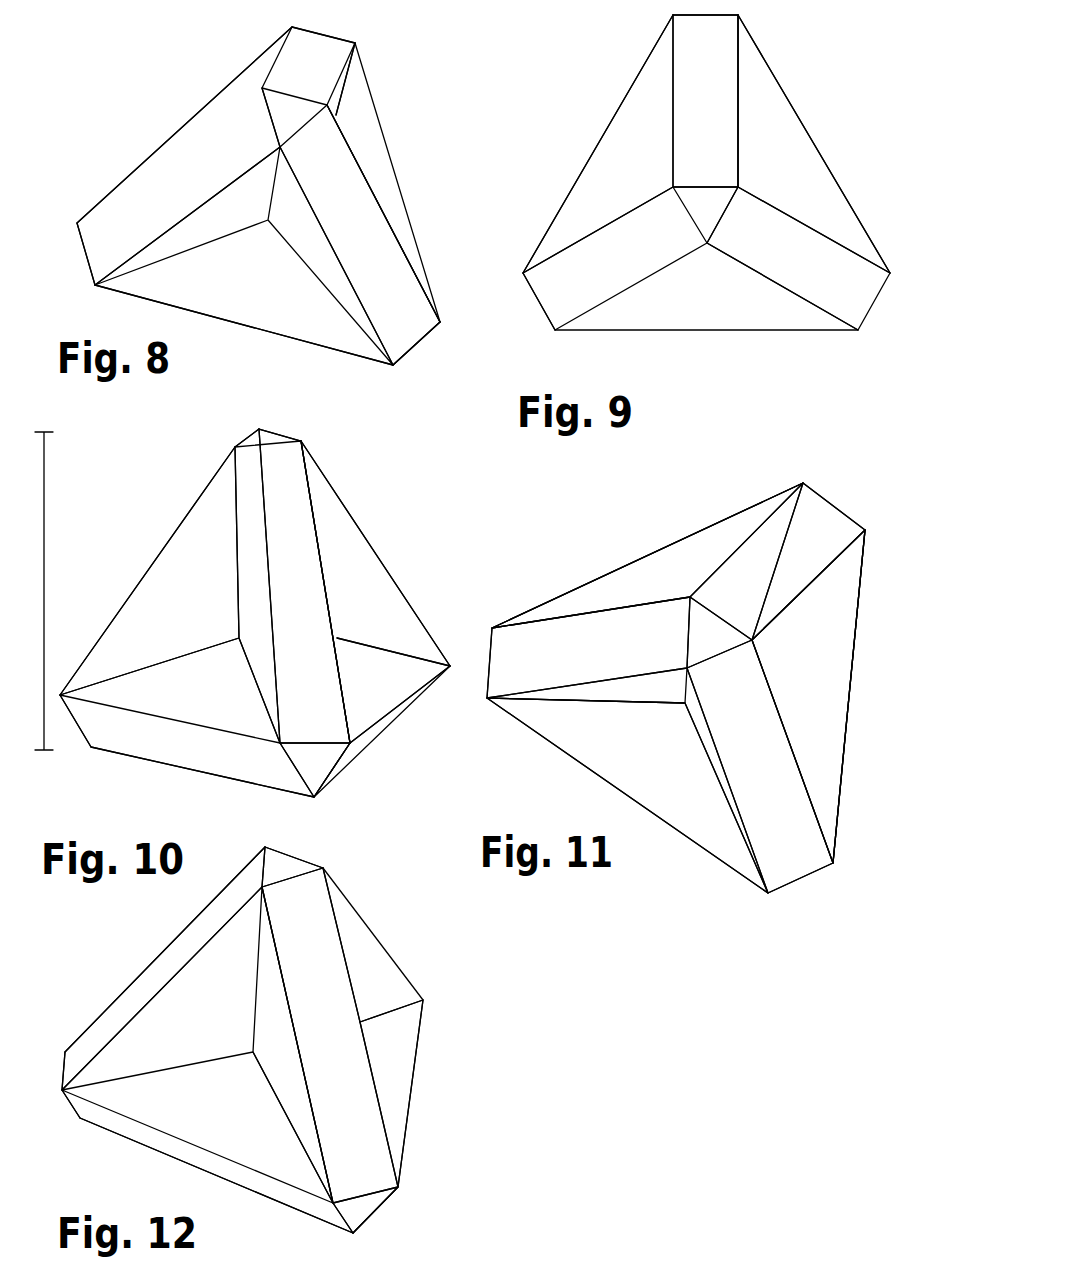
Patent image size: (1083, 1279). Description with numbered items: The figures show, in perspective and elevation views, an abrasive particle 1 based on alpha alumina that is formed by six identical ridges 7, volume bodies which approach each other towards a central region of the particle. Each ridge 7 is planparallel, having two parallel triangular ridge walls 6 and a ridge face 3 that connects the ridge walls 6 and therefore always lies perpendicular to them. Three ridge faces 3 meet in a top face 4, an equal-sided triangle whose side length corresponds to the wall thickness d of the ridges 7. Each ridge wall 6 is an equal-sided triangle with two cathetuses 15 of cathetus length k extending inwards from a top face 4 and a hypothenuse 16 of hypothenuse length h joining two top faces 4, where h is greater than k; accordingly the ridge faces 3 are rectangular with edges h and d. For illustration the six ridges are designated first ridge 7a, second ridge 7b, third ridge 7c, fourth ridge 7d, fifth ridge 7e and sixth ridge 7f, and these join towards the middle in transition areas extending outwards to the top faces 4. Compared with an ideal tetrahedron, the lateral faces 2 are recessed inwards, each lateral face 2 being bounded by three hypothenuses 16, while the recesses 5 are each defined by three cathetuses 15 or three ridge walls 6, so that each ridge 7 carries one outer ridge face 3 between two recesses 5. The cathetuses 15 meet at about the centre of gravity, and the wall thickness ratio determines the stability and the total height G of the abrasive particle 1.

In FIG. 8, the abrasive particle 1 is at (357, 42).
In FIG. 9, the abrasive particle 1 is at (738, 15).
In FIG. 10, the abrasive particle 1 is at (326, 472).
In FIG. 11, the abrasive particle 1 is at (865, 557).
In FIG. 12, the abrasive particle 1 is at (348, 895).
In FIG. 8, the lateral face 2 is at (238, 60).
In FIG. 9, the lateral face 2 is at (680, 335).
In FIG. 11, the lateral face 2 is at (552, 768).
In FIG. 8, the ridge face 3 is at (198, 160).
In FIG. 9, the ridge face 3 is at (725, 65).
In FIG. 10, the ridge face 3 is at (312, 581).
In FIG. 11, the ridge face 3 is at (590, 623).
In FIG. 12, the ridge face 3 is at (368, 930).
In FIG. 8, the top face 4 is at (263, 113).
In FIG. 9, the top face 4 is at (712, 200).
In FIG. 10, the top face 4 is at (259, 429).
In FIG. 11, the top face 4 is at (710, 623).
In FIG. 12, the top face 4 is at (297, 868).
In FIG. 9, the recess 5 is at (636, 165).
In FIG. 10, the recess 5 is at (198, 588).
In FIG. 8, the ridge wall 6 is at (338, 95).
In FIG. 12, the ridge wall 6 is at (395, 978).
In FIG. 8, the ridge 7 is at (347, 155).
In FIG. 9, the ridge 7 is at (673, 90).
In FIG. 10, the ridge 7 is at (330, 638).
In FIG. 12, the ridge 7 is at (317, 1123).
In FIG. 11, the first ridge 7a is at (535, 623).
In FIG. 11, the second ridge 7b is at (823, 550).
In FIG. 11, the third ridge 7c is at (780, 850).
In FIG. 11, the fourth ridge 7d is at (685, 788).
In FIG. 11, the fifth ridge 7e is at (663, 582).
In FIG. 11, the sixth ridge 7f is at (832, 667).
In FIG. 8, the cathetus 15 is at (232, 233).
In FIG. 9, the cathetus 15 is at (740, 117).
In FIG. 8, the hypothenuse 16 is at (425, 267).
In FIG. 9, the hypothenuse 16 is at (825, 157).
In FIG. 10, the total height G is at (62, 591).
In FIG. 10, the hypothenuse length h is at (135, 582).
In FIG. 10, the cathetus length k is at (235, 545).
In FIG. 10, the wall thickness d is at (312, 741).